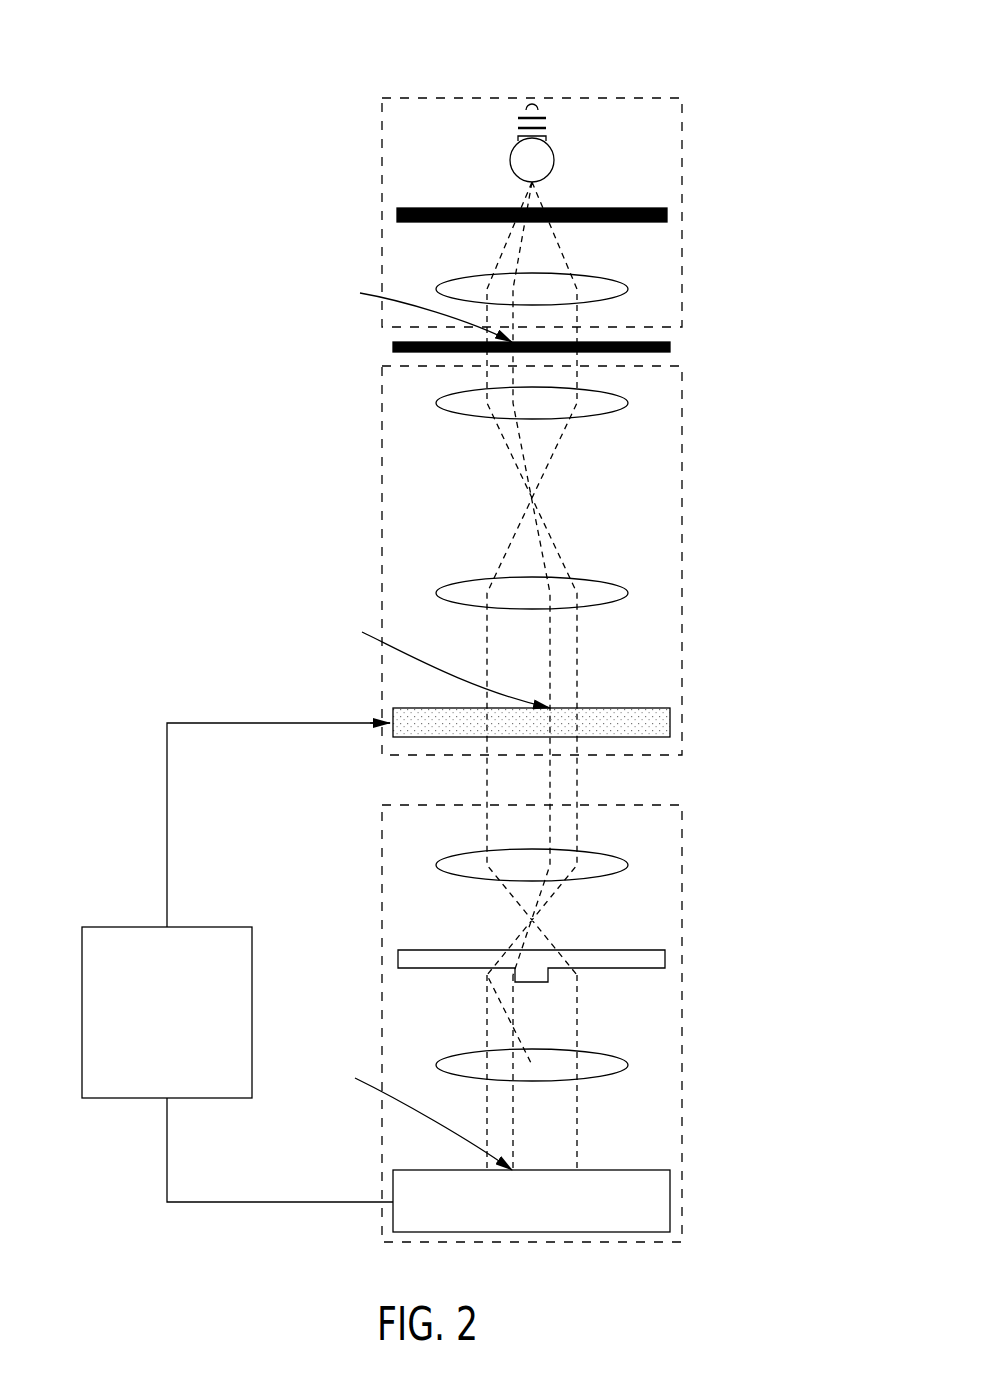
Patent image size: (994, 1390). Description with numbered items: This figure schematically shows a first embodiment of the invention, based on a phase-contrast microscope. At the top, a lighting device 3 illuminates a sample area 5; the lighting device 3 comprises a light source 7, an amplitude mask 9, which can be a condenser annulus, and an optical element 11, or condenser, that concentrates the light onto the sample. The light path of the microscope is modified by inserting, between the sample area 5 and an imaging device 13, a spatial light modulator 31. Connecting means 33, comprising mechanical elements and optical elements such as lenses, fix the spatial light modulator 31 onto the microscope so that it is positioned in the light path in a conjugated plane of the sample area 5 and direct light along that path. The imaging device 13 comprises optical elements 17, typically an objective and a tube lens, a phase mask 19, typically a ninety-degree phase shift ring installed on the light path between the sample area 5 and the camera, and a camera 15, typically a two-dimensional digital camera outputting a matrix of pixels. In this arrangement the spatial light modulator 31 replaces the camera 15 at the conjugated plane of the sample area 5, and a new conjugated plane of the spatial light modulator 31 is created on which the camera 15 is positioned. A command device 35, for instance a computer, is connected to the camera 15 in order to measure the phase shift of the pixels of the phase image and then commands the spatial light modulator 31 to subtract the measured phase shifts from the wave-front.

The lighting device 3 is at (652, 97).
The light source 7 is at (548, 145).
The amplitude mask 9 is at (647, 208).
The optical element 11 is at (627, 288).
The sample area 5 is at (645, 342).
The connecting means 33 is at (627, 405).
The spatial light modulator 31 is at (650, 708).
The imaging device 13 is at (682, 840).
The optical elements 17 is at (612, 870).
The phase mask 19 is at (418, 950).
The camera 15 is at (650, 1170).
The command device 35 is at (179, 1026).